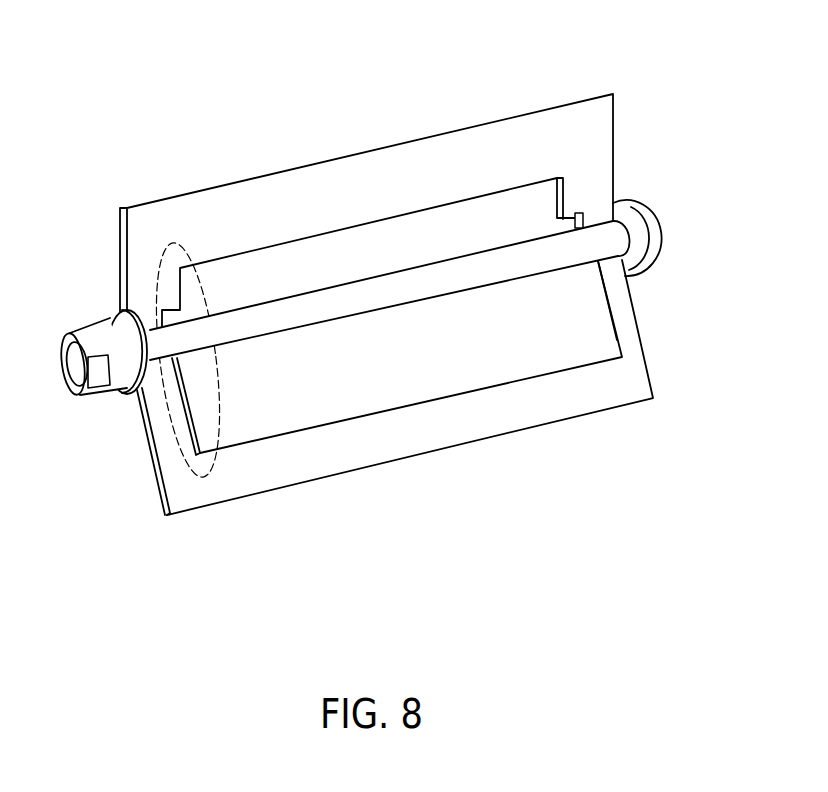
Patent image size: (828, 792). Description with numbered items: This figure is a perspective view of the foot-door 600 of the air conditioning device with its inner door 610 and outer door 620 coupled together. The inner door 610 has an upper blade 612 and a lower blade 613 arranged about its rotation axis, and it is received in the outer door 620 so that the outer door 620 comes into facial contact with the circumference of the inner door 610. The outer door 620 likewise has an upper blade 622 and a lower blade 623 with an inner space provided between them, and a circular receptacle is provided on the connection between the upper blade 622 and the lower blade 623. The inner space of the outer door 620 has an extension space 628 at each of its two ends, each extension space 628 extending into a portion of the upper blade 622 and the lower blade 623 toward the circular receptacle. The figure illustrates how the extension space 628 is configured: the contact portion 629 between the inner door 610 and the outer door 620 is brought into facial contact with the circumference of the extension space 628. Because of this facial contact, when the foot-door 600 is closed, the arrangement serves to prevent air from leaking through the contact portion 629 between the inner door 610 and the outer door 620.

The foot-door 600 is at (400, 307).
The inner door 610 is at (466, 407).
The upper blade 612 is at (515, 217).
The lower blade 613 is at (578, 324).
The outer door 620 is at (395, 410).
The upper blade 622 is at (568, 124).
The lower blade 623 is at (473, 432).
The extension space 628 is at (578, 217).
The contact portion 629 is at (174, 243).